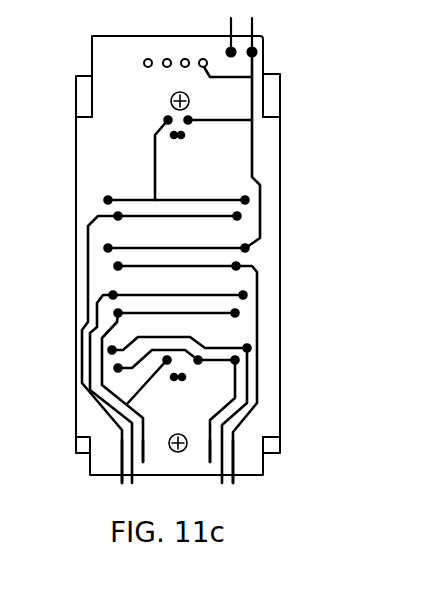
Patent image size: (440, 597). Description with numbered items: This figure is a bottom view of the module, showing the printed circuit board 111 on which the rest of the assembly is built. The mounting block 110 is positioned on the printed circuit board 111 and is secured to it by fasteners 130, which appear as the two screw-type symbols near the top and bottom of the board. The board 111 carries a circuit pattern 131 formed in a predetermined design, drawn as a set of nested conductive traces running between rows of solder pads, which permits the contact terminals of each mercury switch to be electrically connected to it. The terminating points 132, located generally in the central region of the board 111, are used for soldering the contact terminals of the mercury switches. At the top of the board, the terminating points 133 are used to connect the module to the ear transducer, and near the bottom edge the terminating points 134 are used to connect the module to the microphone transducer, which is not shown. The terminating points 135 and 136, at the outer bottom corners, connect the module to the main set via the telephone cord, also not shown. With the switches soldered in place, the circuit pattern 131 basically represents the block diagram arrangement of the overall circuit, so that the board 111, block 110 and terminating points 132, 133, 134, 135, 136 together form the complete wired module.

The mounting block 110 is at (277, 95).
The printed circuit board 111 is at (273, 154).
The fasteners 130 is at (172, 98).
The circuit pattern 131 is at (268, 260).
The terminating points 132 is at (107, 200).
The terminating points 133 is at (254, 50).
The terminating points 134 is at (143, 458).
The terminating point 135 is at (124, 490).
The terminating point 136 is at (228, 490).